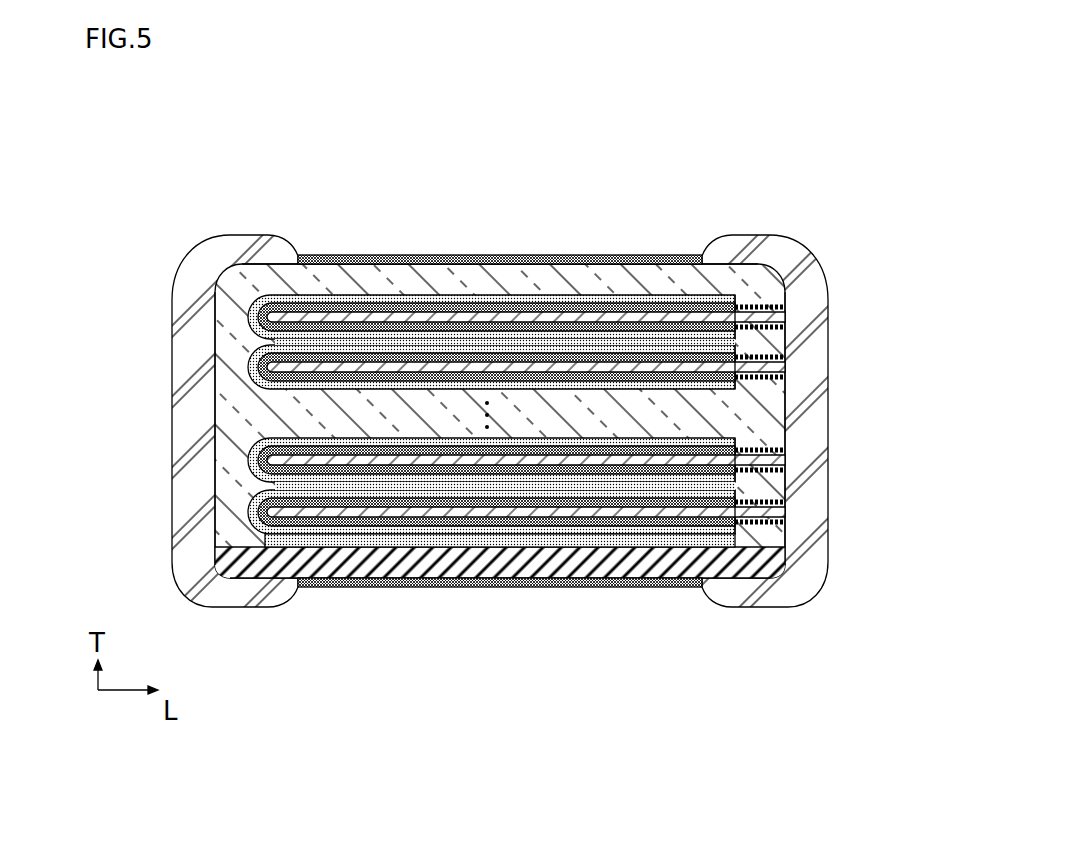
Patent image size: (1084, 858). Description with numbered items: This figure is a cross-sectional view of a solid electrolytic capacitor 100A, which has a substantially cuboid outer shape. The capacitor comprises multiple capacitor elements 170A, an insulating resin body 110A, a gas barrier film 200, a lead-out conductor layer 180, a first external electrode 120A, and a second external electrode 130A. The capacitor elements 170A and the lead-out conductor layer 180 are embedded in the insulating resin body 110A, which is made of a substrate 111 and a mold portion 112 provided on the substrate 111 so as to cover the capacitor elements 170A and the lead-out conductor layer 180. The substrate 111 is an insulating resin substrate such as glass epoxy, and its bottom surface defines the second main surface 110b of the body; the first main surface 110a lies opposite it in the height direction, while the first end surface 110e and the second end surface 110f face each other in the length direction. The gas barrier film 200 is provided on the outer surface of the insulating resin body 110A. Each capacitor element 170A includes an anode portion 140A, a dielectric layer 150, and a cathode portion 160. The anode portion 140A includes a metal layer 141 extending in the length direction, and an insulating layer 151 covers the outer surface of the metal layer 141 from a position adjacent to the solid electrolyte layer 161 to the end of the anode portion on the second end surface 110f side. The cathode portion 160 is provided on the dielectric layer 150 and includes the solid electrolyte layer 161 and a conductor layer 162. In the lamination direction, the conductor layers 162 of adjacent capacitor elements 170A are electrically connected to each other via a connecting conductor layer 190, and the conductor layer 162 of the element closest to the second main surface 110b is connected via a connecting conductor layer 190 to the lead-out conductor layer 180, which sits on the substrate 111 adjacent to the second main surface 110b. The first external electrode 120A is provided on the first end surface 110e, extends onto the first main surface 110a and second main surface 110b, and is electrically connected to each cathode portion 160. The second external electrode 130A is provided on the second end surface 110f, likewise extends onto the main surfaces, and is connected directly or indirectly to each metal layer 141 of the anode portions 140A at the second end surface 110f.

The solid electrolytic capacitor 100A is at (194, 170).
The insulating resin body 110A is at (500, 487).
The substrate 111 is at (653, 567).
The mold portion 112 is at (632, 280).
The first main surface 110a is at (403, 264).
The second main surface 110b is at (383, 587).
The first end surface 110e is at (215, 427).
The second end surface 110f is at (787, 347).
The first external electrode 120A is at (220, 596).
The second external electrode 130A is at (780, 595).
The anode portion 140A is at (776, 327).
The metal layer 141 is at (752, 306).
The dielectric layer 150 is at (567, 296).
The insulating layer 151 is at (735, 300).
The cathode portion 160 is at (521, 329).
The solid electrolyte layer 161 is at (503, 305).
The conductor layer 162 is at (443, 303).
The capacitor element 170A is at (461, 318).
The lead-out conductor layer 180 is at (473, 587).
The connecting conductor layer 190 is at (265, 342).
The gas barrier film 200 is at (337, 256).